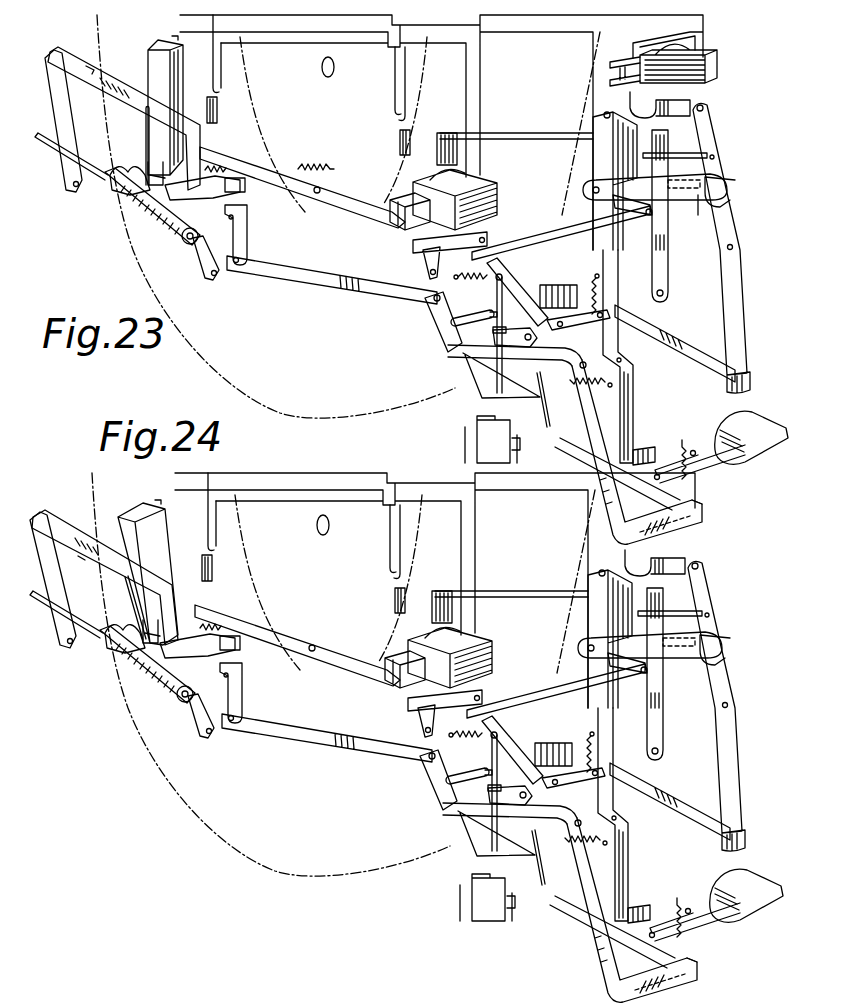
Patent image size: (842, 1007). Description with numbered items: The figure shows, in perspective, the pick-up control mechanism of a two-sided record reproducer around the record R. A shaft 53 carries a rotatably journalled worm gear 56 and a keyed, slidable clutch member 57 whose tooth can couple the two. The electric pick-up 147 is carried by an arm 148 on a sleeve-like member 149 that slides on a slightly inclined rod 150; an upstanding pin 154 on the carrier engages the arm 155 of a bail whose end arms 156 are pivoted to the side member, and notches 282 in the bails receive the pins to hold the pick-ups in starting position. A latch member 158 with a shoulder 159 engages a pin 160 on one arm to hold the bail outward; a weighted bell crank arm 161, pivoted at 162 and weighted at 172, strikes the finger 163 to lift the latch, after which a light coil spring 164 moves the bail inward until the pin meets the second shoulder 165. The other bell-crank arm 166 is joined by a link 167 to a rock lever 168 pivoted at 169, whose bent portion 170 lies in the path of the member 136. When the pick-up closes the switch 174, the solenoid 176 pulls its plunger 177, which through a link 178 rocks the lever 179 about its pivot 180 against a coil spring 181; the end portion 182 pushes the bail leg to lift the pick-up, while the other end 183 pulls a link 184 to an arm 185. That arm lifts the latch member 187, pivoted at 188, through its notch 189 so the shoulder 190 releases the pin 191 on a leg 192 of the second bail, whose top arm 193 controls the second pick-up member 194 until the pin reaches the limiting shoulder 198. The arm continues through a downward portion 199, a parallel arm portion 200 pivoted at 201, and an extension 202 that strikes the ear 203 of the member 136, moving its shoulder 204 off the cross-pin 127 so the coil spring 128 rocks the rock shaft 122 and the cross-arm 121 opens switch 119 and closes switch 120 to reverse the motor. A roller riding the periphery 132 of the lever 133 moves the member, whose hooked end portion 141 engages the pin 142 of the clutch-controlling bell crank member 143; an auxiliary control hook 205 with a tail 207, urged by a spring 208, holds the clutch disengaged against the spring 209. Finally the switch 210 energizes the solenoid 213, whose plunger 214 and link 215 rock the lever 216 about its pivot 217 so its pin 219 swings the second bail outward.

In FIG. 23, the shaft 53 is at (455, 335).
In FIG. 24, the shaft 53 is at (440, 780).
In FIG. 23, the worm gear 56 is at (545, 290).
In FIG. 24, the worm gear 56 is at (559, 748).
In FIG. 23, the clutch member 57 is at (475, 310).
In FIG. 24, the clutch member 57 is at (494, 750).
In FIG. 23, the switch 119 is at (465, 445).
In FIG. 24, the switch 119 is at (443, 903).
In FIG. 23, the switch 120 is at (517, 460).
In FIG. 24, the switch 120 is at (528, 912).
In FIG. 23, the cross-arm 121 is at (496, 448).
In FIG. 24, the cross-arm 121 is at (485, 936).
In FIG. 23, the rock shaft 122 is at (490, 416).
In FIG. 24, the rock shaft 122 is at (468, 893).
In FIG. 23, the cross-pin 127 is at (545, 395).
In FIG. 24, the cross-pin 127 is at (531, 866).
In FIG. 23, the coil spring 128 is at (612, 385).
In FIG. 24, the coil spring 128 is at (597, 847).
In FIG. 23, the periphery 132 is at (730, 415).
In FIG. 24, the periphery 132 is at (745, 894).
In FIG. 23, the lever 133 is at (700, 465).
In FIG. 24, the lever 133 is at (695, 925).
In FIG. 23, the member 136 is at (665, 500).
In FIG. 24, the member 136 is at (558, 934).
In FIG. 23, the hooked end portion 141 is at (465, 378).
In FIG. 24, the hooked end portion 141 is at (445, 830).
In FIG. 23, the pin 142 is at (495, 297).
In FIG. 24, the pin 142 is at (485, 780).
In FIG. 23, the bell crank member 143 is at (535, 345).
In FIG. 24, the bell crank member 143 is at (527, 796).
In FIG. 23, the pick-up device 147 is at (150, 52).
In FIG. 24, the pick-up device 147 is at (145, 561).
In FIG. 23, the arm 148 is at (148, 168).
In FIG. 24, the arm 148 is at (135, 629).
In FIG. 23, the sleeve-like member 149 is at (125, 210).
In FIG. 24, the sleeve-like member 149 is at (136, 664).
In FIG. 23, the rod 150 is at (95, 195).
In FIG. 24, the rod 150 is at (66, 631).
In FIG. 23, the pin 154 is at (145, 115).
In FIG. 24, the pin 154 is at (123, 608).
In FIG. 23, the arm 155 is at (138, 84).
In FIG. 24, the arm 155 is at (105, 577).
In FIG. 23, the end arms 156 is at (62, 108).
In FIG. 24, the end arms 156 is at (122, 629).
In FIG. 23, the latch member 158 is at (225, 195).
In FIG. 24, the latch member 158 is at (237, 647).
In FIG. 23, the shoulder 159 is at (160, 200).
In FIG. 23, the pin 160 is at (182, 238).
In FIG. 24, the pin 160 is at (157, 663).
In FIG. 23, the bell crank arm 161 is at (178, 250).
In FIG. 24, the bell crank arm 161 is at (174, 713).
In FIG. 23, the pivot 162 is at (235, 218).
In FIG. 24, the pivot 162 is at (248, 672).
In FIG. 23, the finger 163 is at (192, 178).
In FIG. 24, the finger 163 is at (163, 668).
In FIG. 23, the coil spring 164 is at (218, 168).
In FIG. 24, the coil spring 164 is at (217, 615).
In FIG. 24, the second shoulder 165 is at (226, 660).
In FIG. 23, the arm 166 is at (240, 240).
In FIG. 24, the arm 166 is at (246, 693).
In FIG. 23, the link 167 is at (318, 285).
In FIG. 24, the link 167 is at (327, 738).
In FIG. 23, the rock lever 168 is at (610, 505).
In FIG. 24, the rock lever 168 is at (627, 910).
In FIG. 23, the pivot 169 is at (583, 367).
In FIG. 24, the pivot 169 is at (592, 833).
In FIG. 23, the bent portion 170 is at (700, 515).
In FIG. 24, the bent portion 170 is at (685, 975).
In FIG. 23, the weight 172 is at (150, 235).
In FIG. 24, the weight 172 is at (144, 694).
In FIG. 23, the electric switch 174 is at (225, 92).
In FIG. 24, the electric switch 174 is at (234, 564).
In FIG. 23, the solenoid 176 is at (497, 196).
In FIG. 24, the solenoid 176 is at (466, 657).
In FIG. 23, the plunger 177 is at (410, 200).
In FIG. 24, the plunger 177 is at (405, 664).
In FIG. 23, the link 178 is at (415, 246).
In FIG. 24, the link 178 is at (427, 712).
In FIG. 23, the lever 179 is at (360, 222).
In FIG. 24, the lever 179 is at (297, 645).
In FIG. 23, the pivot 180 is at (320, 190).
In FIG. 24, the pivot 180 is at (333, 635).
In FIG. 23, the coil spring 181 is at (298, 168).
In FIG. 23, the end portion 182 is at (280, 172).
In FIG. 23, the other end 183 is at (468, 238).
In FIG. 24, the other end 183 is at (484, 685).
In FIG. 23, the link 184 is at (522, 232).
In FIG. 24, the link 184 is at (557, 683).
In FIG. 23, the arm 185 is at (646, 215).
In FIG. 24, the arm 185 is at (638, 679).
In FIG. 23, the latch member 187 is at (672, 198).
In FIG. 24, the latch member 187 is at (716, 611).
In FIG. 23, the pivot 188 is at (590, 185).
In FIG. 24, the pivot 188 is at (633, 642).
In FIG. 23, the notch 189 is at (648, 158).
In FIG. 24, the notch 189 is at (657, 628).
In FIG. 23, the shoulder 190 is at (698, 200).
In FIG. 23, the pin 191 is at (728, 204).
In FIG. 24, the pin 191 is at (731, 650).
In FIG. 23, the legs 192 is at (440, 160).
In FIG. 24, the legs 192 is at (561, 674).
In FIG. 23, the top arm 193 is at (537, 125).
In FIG. 24, the top arm 193 is at (511, 583).
In FIG. 23, the second pick-up member 194 is at (593, 157).
In FIG. 24, the second pick-up member 194 is at (588, 639).
In FIG. 23, the limiting shoulder 198 is at (668, 183).
In FIG. 24, the limiting shoulder 198 is at (686, 660).
In FIG. 23, the downward portion 199 is at (612, 290).
In FIG. 24, the downward portion 199 is at (621, 814).
In FIG. 23, the arm portion 200 is at (635, 372).
In FIG. 24, the arm portion 200 is at (655, 827).
In FIG. 23, the pivot 201 is at (622, 362).
In FIG. 24, the pivot 201 is at (631, 812).
In FIG. 23, the extension 202 is at (633, 415).
In FIG. 24, the extension 202 is at (653, 883).
In FIG. 23, the ear 203 is at (645, 450).
In FIG. 24, the ear 203 is at (655, 908).
In FIG. 23, the shoulder 204 is at (520, 444).
In FIG. 24, the shoulder 204 is at (531, 907).
In FIG. 23, the auxiliary control hook 205 is at (580, 327).
In FIG. 24, the auxiliary control hook 205 is at (551, 751).
In FIG. 23, the tail 207 is at (655, 330).
In FIG. 24, the tail 207 is at (670, 801).
In FIG. 23, the spring 208 is at (592, 312).
In FIG. 24, the spring 208 is at (617, 752).
In FIG. 23, the spring 209 is at (465, 275).
In FIG. 24, the spring 209 is at (464, 724).
In FIG. 23, the electric switch 210 is at (395, 118).
In FIG. 24, the electric switch 210 is at (371, 582).
In FIG. 23, the solenoid 213 is at (718, 65).
In FIG. 23, the plunger 214 is at (650, 88).
In FIG. 23, the link 215 is at (700, 105).
In FIG. 24, the link 215 is at (669, 560).
In FIG. 23, the lever 216 is at (718, 128).
In FIG. 24, the lever 216 is at (717, 706).
In FIG. 23, the pivot 217 is at (733, 247).
In FIG. 24, the pivot 217 is at (746, 703).
In FIG. 23, the pin 219 is at (710, 150).
In FIG. 24, the pin 219 is at (725, 597).
In FIG. 23, the notches 282 is at (88, 66).
In FIG. 24, the notches 282 is at (80, 570).
In FIG. 23, the record R is at (322, 418).
In FIG. 24, the record R is at (240, 882).